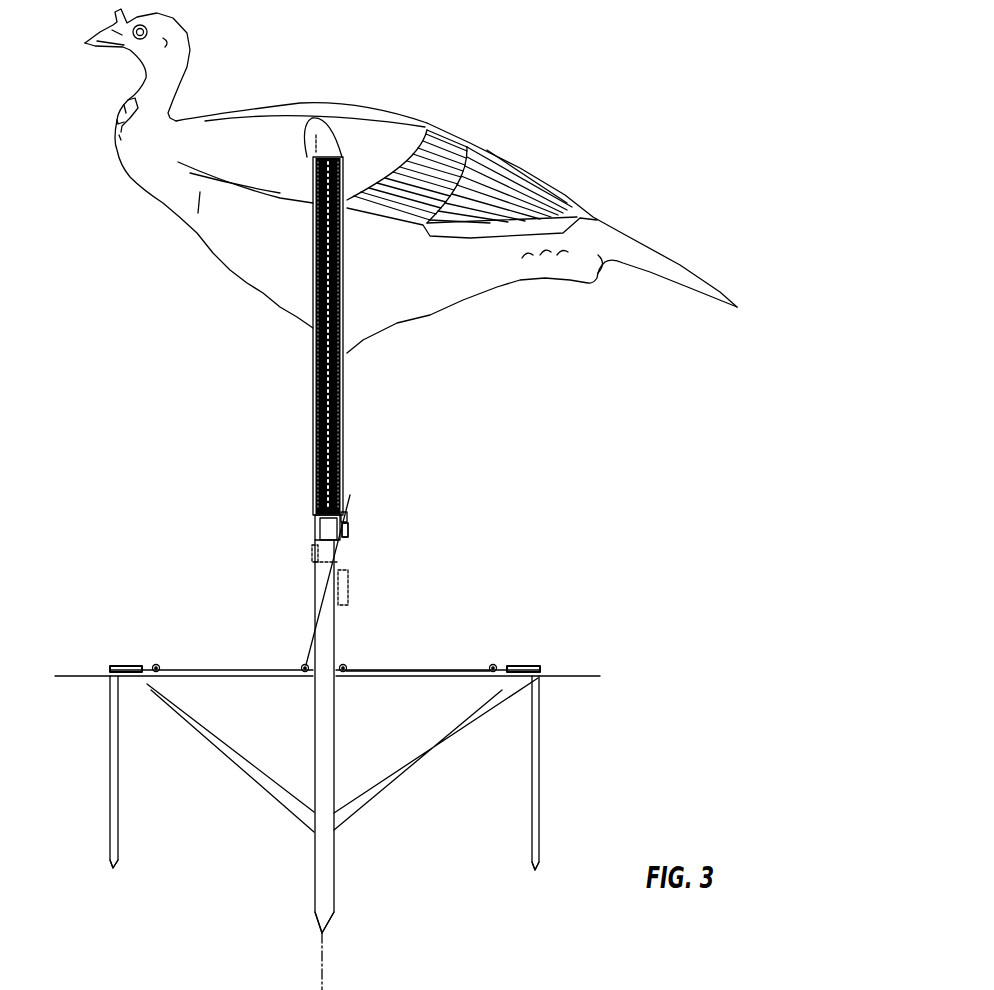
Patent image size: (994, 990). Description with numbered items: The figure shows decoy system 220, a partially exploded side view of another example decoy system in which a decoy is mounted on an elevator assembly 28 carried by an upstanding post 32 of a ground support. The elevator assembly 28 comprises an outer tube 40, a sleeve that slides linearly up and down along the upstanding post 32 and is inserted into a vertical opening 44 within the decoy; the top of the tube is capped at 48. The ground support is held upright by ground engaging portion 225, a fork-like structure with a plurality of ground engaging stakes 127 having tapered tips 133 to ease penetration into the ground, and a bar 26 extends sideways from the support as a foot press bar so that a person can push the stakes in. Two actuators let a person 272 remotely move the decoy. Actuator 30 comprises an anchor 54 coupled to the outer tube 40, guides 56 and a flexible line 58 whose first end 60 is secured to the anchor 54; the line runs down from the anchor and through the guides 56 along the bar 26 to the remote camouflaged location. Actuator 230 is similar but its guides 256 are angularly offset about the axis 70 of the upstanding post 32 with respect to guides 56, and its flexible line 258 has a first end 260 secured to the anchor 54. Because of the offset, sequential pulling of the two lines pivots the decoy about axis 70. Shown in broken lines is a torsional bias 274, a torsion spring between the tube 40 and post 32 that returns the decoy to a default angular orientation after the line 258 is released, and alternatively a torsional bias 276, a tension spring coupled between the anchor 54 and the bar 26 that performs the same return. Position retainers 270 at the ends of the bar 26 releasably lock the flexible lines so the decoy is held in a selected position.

The decoy system 220 is at (688, 84).
The opening 44 is at (348, 325).
The pole cap 48 is at (340, 156).
The elevator assembly 28 is at (308, 360).
The outer tube 40 is at (314, 421).
The anchor 54 is at (344, 512).
The first end 60 is at (349, 531).
The first end 260 is at (345, 530).
The torsional bias 274 is at (313, 553).
The flexible line 258 is at (322, 600).
The upstanding post 32 is at (314, 596).
The actuator 230 is at (292, 622).
The torsional bias 276 is at (350, 590).
The guides 56 is at (345, 662).
The flexible line 58 is at (388, 667).
The actuator 30 is at (414, 656).
The position retainers 270 is at (122, 666).
The guides 256 is at (160, 665).
The ground engaging stakes 127 is at (108, 735).
The tapered tips 133 is at (118, 866).
The bar 26 is at (368, 682).
The ground engaging portion 225 is at (540, 749).
The axis 70 is at (320, 975).
The person 272 is at (401, 987).